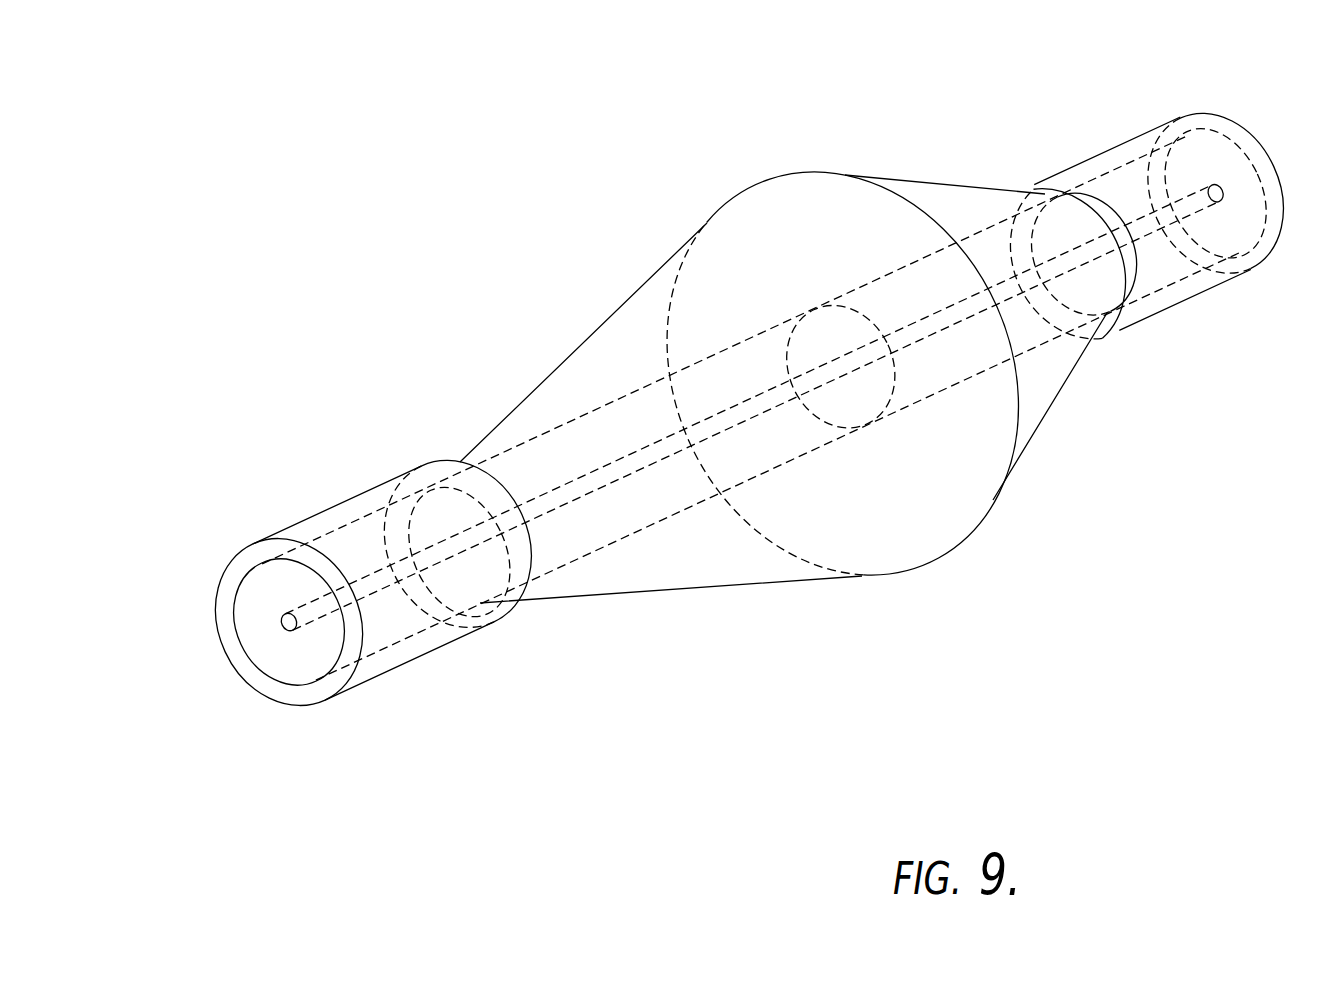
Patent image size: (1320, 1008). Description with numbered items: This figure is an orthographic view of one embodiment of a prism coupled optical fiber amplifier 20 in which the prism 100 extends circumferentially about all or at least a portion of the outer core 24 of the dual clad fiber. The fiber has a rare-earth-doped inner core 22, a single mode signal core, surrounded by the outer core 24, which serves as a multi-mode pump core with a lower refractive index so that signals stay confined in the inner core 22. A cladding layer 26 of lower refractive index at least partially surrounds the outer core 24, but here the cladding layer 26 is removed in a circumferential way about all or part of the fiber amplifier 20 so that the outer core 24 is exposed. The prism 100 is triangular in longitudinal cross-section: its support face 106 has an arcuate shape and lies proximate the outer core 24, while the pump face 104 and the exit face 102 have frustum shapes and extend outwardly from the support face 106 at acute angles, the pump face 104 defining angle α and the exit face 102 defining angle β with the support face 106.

The prism 100 is at (755, 414).
The exit face 102 is at (608, 360).
The pump face 104 is at (972, 200).
The support face 106 is at (678, 513).
The fiber amplifier 20 is at (403, 588).
The inner core 22 is at (288, 633).
The outer core 24 is at (322, 653).
The cladding layer 26 is at (272, 546).